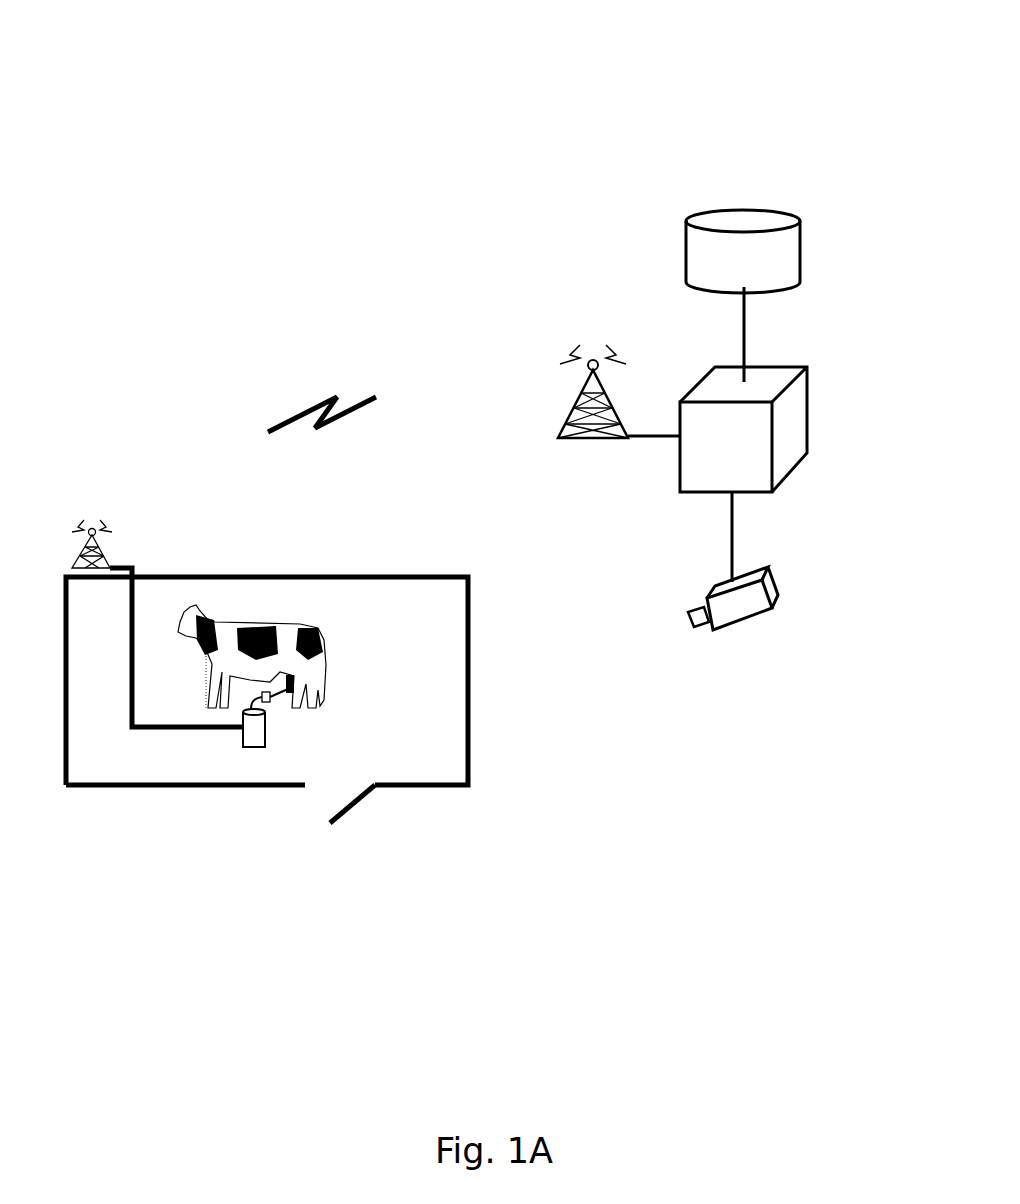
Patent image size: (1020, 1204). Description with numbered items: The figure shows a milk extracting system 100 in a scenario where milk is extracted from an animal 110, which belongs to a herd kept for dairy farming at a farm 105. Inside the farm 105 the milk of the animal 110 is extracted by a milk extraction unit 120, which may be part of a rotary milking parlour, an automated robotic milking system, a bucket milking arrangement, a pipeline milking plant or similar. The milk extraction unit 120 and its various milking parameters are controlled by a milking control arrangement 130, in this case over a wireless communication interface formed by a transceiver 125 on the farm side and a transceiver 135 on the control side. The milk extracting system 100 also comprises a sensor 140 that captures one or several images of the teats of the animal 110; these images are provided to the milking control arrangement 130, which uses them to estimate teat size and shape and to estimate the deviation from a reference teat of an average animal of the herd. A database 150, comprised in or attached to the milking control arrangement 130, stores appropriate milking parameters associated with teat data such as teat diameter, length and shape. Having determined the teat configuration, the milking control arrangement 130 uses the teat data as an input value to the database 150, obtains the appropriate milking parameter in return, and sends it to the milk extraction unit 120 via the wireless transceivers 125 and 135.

The milk extracting system 100 is at (830, 78).
The farm 105 is at (440, 675).
The animal 110 is at (250, 622).
The milk extraction unit 120 is at (252, 733).
The transceiver 125 is at (92, 528).
The milking control arrangement 130 is at (748, 454).
The transceiver 135 is at (593, 358).
The sensor 140 is at (730, 607).
The database 150 is at (778, 252).